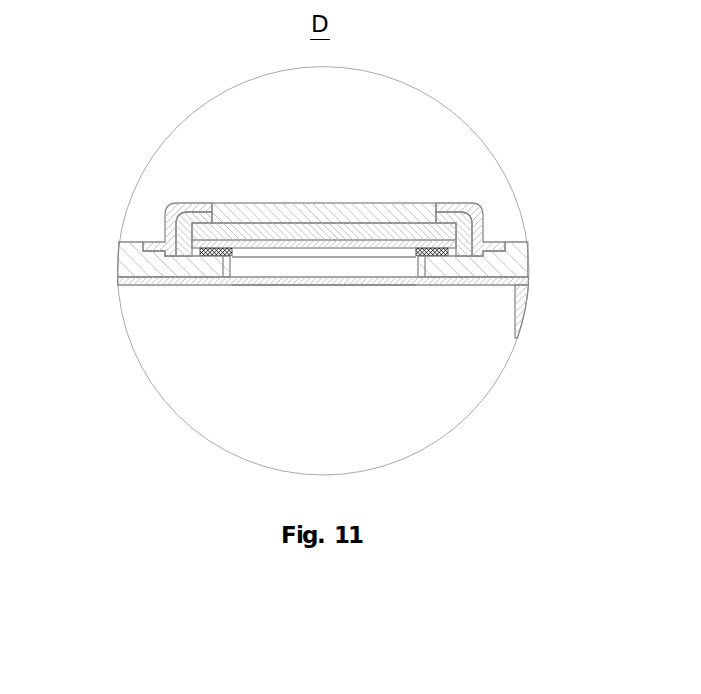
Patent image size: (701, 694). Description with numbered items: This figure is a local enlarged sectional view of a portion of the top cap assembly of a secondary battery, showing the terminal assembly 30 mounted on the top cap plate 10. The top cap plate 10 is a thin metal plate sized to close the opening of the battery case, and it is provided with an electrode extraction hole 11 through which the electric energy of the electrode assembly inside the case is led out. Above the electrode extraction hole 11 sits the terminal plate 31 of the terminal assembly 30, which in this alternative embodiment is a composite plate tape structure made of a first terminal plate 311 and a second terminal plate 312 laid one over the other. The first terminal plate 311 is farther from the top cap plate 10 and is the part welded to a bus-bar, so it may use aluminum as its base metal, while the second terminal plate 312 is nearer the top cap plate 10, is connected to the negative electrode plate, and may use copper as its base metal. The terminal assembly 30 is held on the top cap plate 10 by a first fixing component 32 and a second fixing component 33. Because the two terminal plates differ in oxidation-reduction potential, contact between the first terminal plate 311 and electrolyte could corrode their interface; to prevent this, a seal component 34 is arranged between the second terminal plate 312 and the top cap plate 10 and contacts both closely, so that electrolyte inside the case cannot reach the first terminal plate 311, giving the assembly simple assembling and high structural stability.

The top cap plate 10 is at (135, 258).
The electrode extraction hole 11 is at (328, 290).
The terminal assembly 30 is at (372, 221).
The terminal plate 31 is at (324, 172).
The first terminal plate 311 is at (287, 212).
The second terminal plate 312 is at (355, 240).
The first fixing component 32 is at (466, 206).
The second fixing component 33 is at (505, 242).
The seal component 34 is at (324, 309).